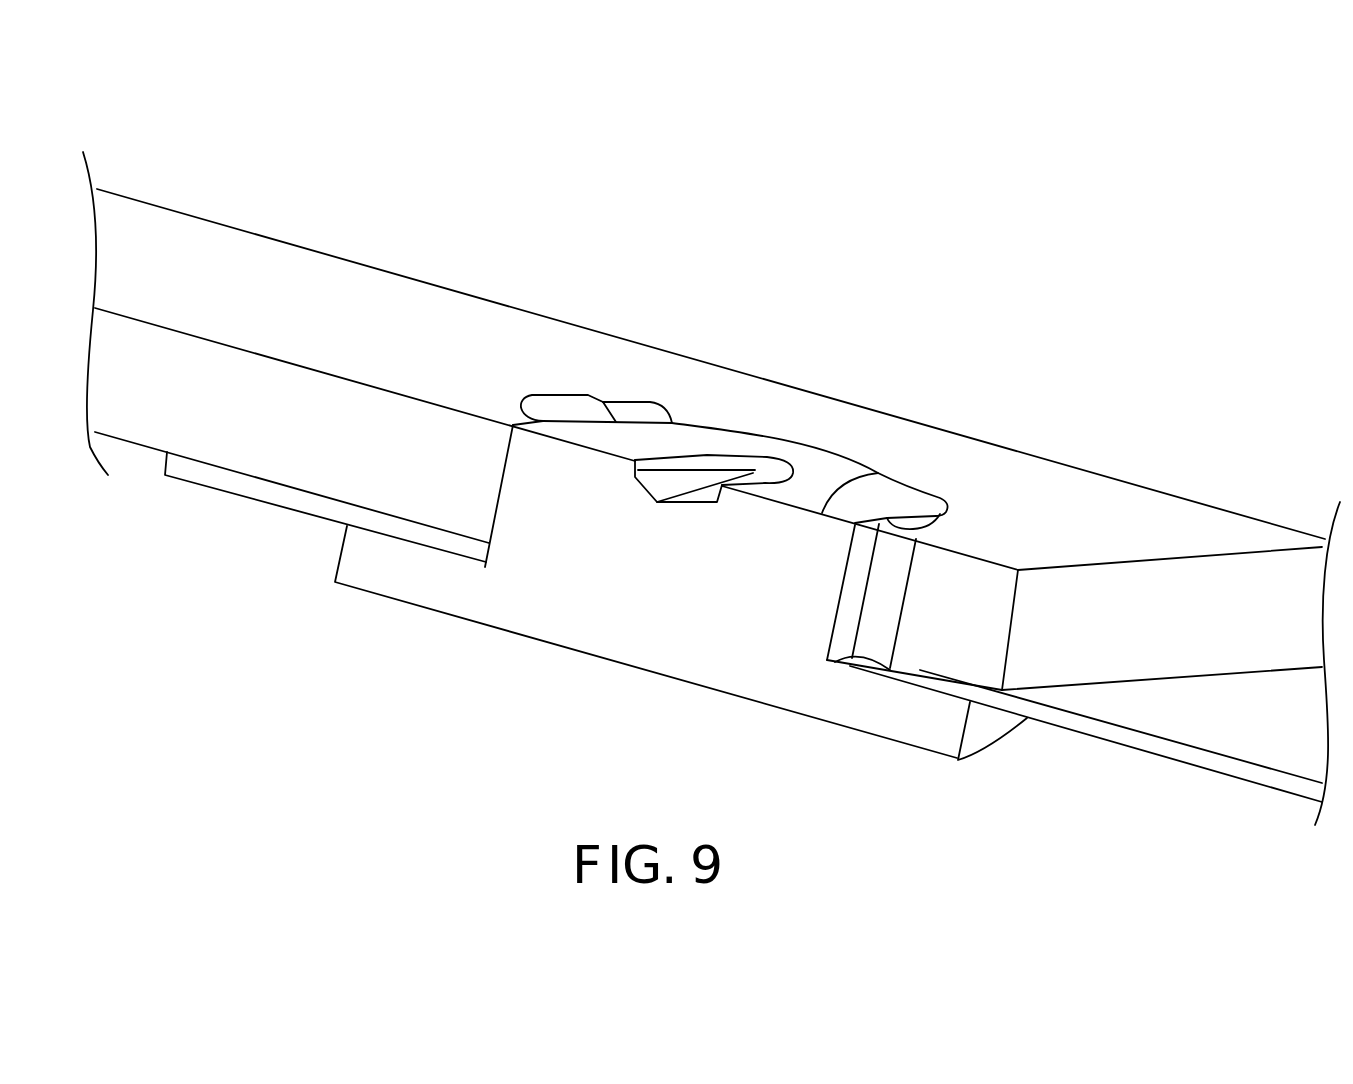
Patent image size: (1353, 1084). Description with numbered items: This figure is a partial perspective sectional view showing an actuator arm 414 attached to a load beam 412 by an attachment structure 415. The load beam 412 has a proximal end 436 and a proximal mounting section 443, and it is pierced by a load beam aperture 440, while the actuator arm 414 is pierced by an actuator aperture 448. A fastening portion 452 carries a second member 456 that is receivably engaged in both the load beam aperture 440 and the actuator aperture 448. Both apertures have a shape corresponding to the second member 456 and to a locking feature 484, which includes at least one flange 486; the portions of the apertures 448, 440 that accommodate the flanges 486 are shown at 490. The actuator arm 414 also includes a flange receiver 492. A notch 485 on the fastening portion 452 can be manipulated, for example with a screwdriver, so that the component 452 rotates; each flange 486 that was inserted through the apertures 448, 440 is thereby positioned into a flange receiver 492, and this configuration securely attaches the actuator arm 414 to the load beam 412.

The actuator arm 414 is at (267, 273).
The load beam 412 is at (1107, 735).
The attachment structure 415 is at (812, 430).
The proximal end 436 is at (160, 463).
The load beam aperture 440 is at (481, 556).
The proximal mounting section 443 is at (921, 691).
The actuator aperture 448 is at (500, 478).
The fastening portion 452 is at (858, 722).
The second member 456 is at (807, 548).
The locking feature 484 is at (966, 493).
The notch 485 is at (735, 462).
The flange 486 is at (567, 410).
The portions of apertures accommodating flanges 490 is at (641, 400).
The flange receiver 492 is at (925, 535).